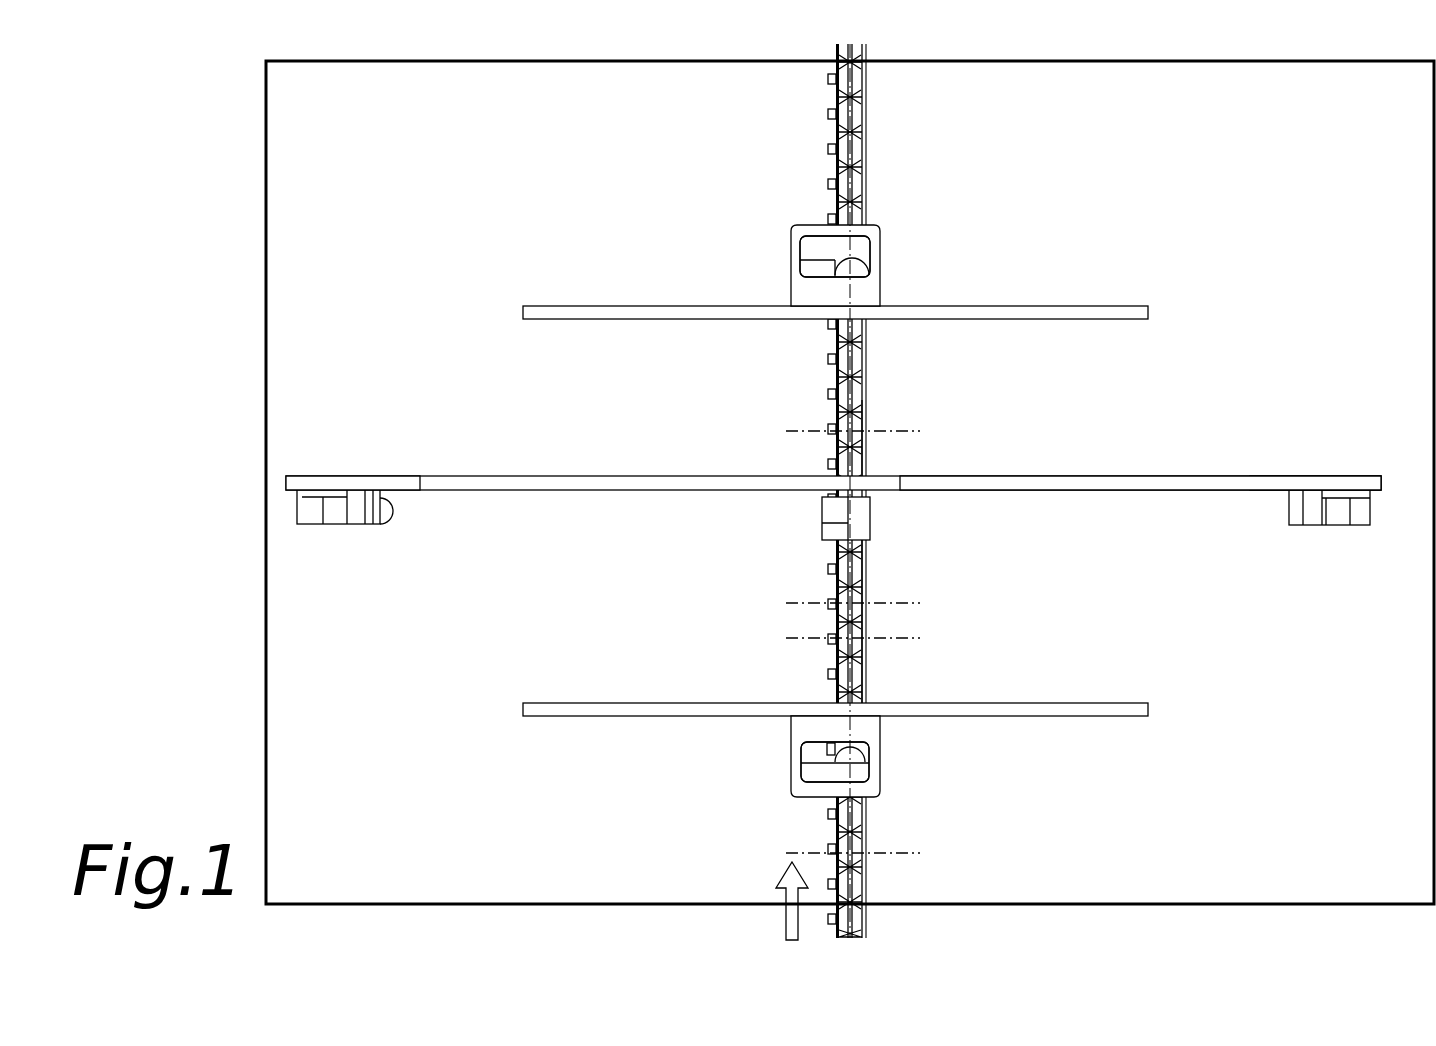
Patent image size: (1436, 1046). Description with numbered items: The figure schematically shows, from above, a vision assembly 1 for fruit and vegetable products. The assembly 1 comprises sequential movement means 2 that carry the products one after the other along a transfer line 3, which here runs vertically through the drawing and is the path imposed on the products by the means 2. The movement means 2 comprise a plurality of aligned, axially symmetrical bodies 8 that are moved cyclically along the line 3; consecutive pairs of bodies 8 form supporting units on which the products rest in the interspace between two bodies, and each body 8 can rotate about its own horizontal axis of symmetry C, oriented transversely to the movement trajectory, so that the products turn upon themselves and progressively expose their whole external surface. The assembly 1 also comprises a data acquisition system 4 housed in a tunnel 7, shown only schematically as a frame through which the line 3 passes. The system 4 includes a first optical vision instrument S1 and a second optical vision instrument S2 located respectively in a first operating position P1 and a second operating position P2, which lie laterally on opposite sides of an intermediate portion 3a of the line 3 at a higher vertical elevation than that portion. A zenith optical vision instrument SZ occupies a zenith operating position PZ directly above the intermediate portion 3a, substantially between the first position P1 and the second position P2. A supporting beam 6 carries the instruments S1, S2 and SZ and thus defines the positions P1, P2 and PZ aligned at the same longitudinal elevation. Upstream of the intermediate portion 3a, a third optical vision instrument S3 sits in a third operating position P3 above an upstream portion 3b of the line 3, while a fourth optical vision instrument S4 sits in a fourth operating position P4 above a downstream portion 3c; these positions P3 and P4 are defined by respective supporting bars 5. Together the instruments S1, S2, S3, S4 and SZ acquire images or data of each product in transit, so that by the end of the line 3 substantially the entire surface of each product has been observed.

The vision assembly 1 is at (146, 158).
The sequential movement means 2 is at (882, 613).
The transfer line 3 is at (862, 940).
The intermediate portion 3a is at (827, 469).
The upstream portion 3b is at (820, 733).
The downstream portion 3c is at (800, 242).
The data acquisition system 4 is at (1082, 413).
The supporting bar 5 is at (557, 307).
The supporting beam 6 is at (468, 476).
The tunnel 7 is at (266, 248).
The axially symmetrical bodies 8 is at (863, 103).
The axis of symmetry C is at (790, 431).
The first operating position P1 is at (322, 472).
The second operating position P2 is at (1340, 470).
The third operating position P3 is at (772, 750).
The fourth operating position P4 is at (807, 197).
The zenith operating position PZ is at (884, 470).
The first optical vision instrument S1 is at (352, 524).
The second optical vision instrument S2 is at (1345, 527).
The third optical vision instrument S3 is at (855, 758).
The fourth optical vision instrument S4 is at (858, 265).
The zenith optical vision instrument SZ is at (866, 510).